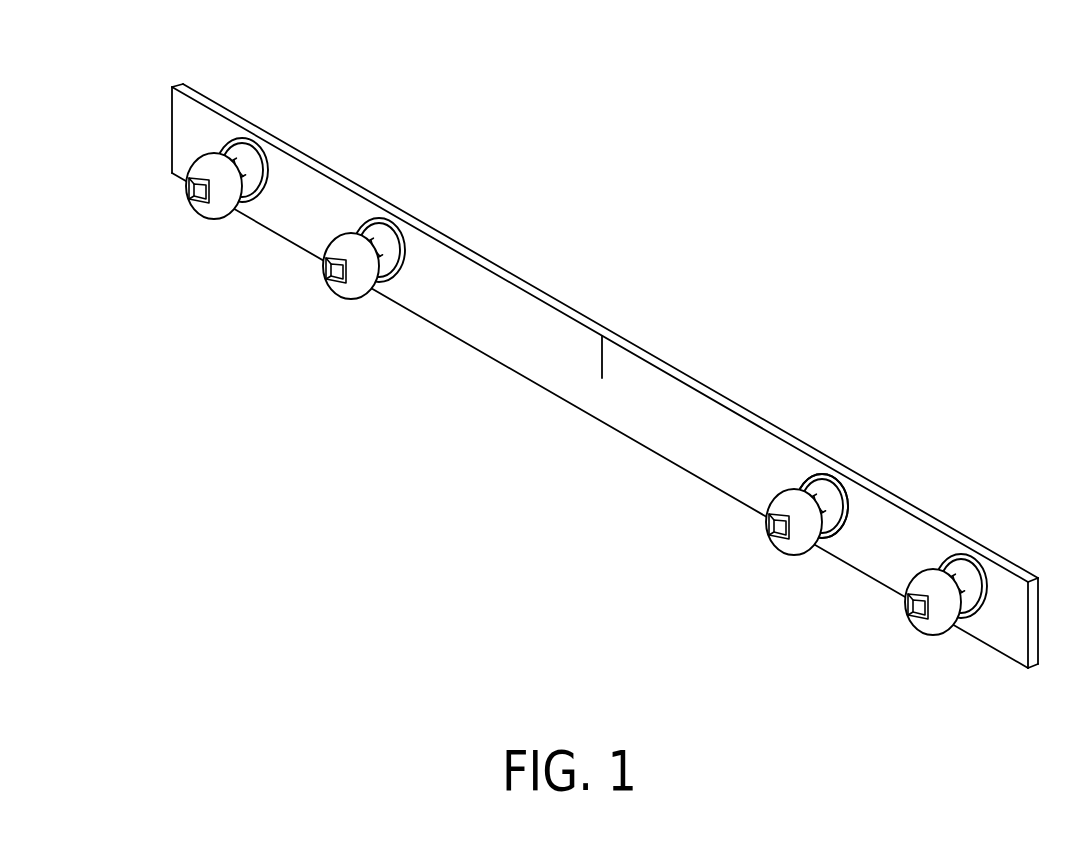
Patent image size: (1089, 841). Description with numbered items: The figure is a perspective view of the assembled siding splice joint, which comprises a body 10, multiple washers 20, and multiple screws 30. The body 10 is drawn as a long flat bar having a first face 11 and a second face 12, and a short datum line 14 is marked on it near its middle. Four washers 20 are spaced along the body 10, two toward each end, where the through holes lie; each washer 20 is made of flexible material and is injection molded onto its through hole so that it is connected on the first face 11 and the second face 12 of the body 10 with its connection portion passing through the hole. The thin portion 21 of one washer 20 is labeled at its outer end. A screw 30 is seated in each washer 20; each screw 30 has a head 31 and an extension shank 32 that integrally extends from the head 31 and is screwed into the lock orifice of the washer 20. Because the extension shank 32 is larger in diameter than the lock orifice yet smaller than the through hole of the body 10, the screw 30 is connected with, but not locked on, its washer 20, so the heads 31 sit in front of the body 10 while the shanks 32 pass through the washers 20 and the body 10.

The body 10 is at (548, 340).
The first face 11 is at (183, 127).
The second face 12 is at (205, 99).
The datum line 14 is at (600, 357).
The washer 20 is at (646, 328).
The thin portion 21 is at (848, 517).
The screw 30 is at (511, 419).
The head 31 is at (777, 503).
The extension shank 32 is at (816, 498).